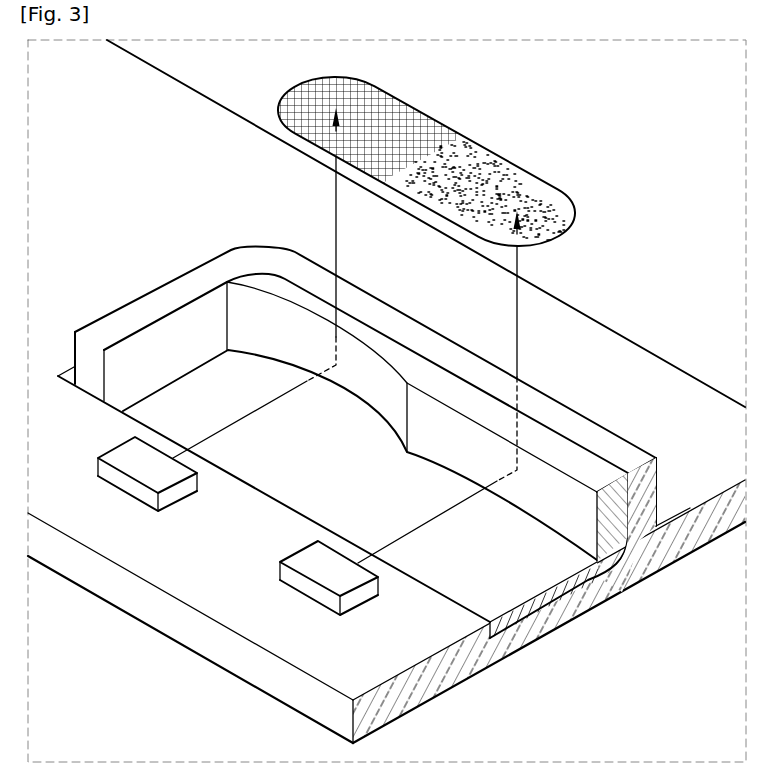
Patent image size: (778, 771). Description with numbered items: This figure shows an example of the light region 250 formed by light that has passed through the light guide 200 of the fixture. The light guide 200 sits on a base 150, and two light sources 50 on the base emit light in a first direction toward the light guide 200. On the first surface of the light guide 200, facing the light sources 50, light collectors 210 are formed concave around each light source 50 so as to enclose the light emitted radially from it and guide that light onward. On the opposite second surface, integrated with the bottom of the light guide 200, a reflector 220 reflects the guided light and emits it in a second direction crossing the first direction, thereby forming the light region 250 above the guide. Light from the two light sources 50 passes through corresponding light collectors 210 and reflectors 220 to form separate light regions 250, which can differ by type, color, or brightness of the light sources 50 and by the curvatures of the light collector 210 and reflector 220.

The light source 50 is at (305, 587).
The base 150 is at (686, 397).
The light guide 200 is at (594, 466).
The light collector 210 is at (547, 476).
The reflector 220 is at (628, 543).
The light region 250 is at (520, 160).